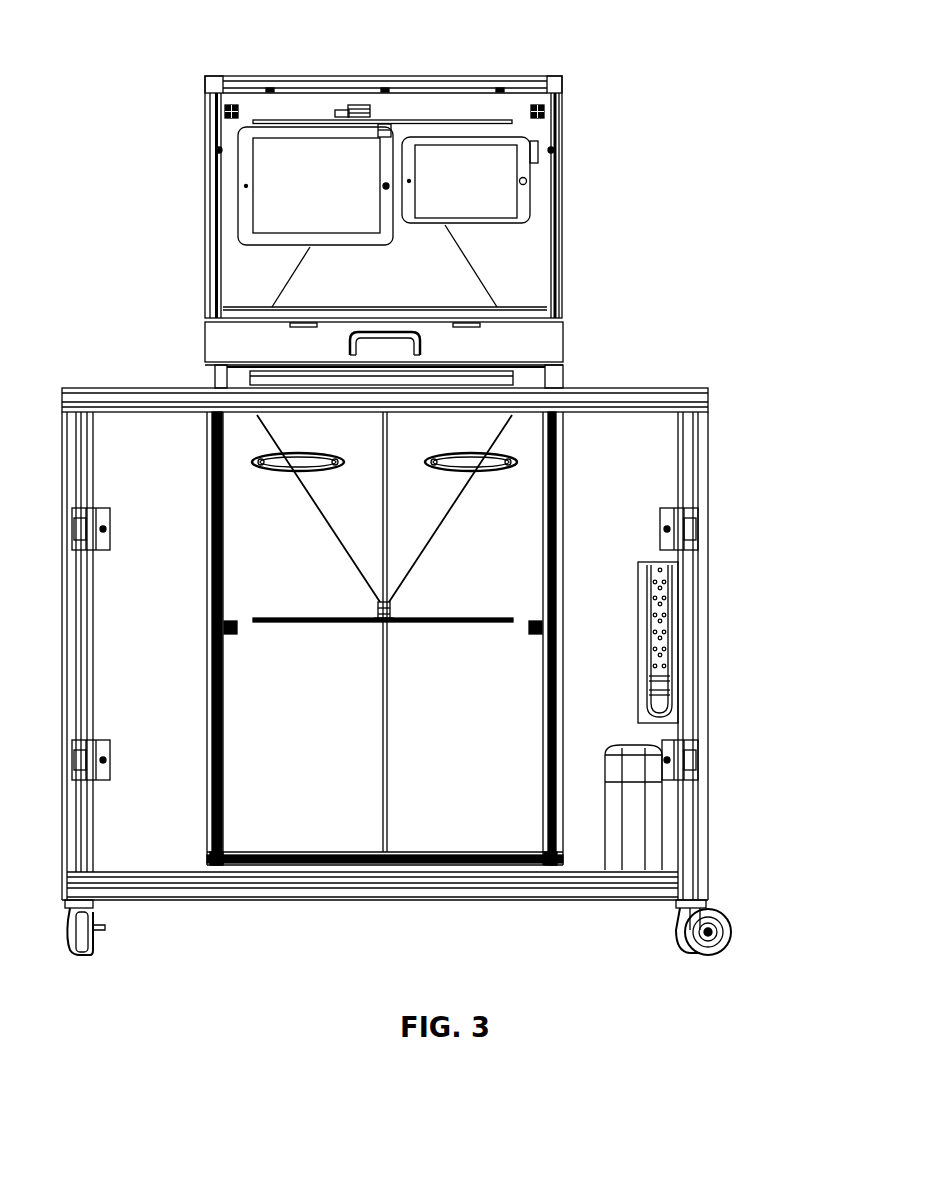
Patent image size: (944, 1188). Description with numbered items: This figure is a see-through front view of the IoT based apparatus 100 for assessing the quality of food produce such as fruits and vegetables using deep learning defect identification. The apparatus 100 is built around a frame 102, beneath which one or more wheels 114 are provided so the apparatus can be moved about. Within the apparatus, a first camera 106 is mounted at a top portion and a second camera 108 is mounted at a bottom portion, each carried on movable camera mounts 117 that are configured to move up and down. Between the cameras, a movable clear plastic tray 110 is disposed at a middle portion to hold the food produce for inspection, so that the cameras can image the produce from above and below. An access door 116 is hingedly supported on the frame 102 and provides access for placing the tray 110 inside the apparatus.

The IoT based apparatus 100 is at (622, 75).
The frame 102 is at (712, 470).
The first camera 106 is at (384, 125).
The second camera 108 is at (382, 622).
The movable clear plastic tray 110 is at (273, 380).
The wheels 114 is at (732, 930).
The access door 116 is at (545, 338).
The camera mounts 117 is at (448, 120).